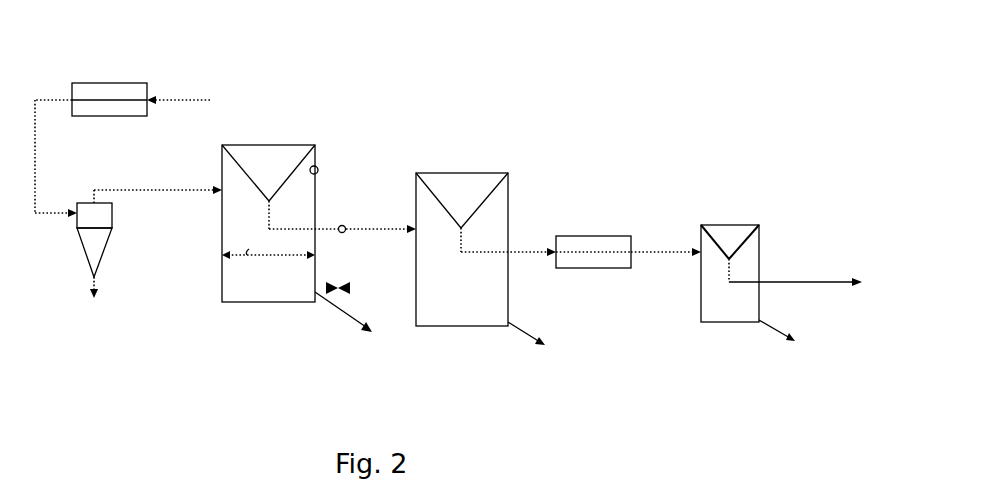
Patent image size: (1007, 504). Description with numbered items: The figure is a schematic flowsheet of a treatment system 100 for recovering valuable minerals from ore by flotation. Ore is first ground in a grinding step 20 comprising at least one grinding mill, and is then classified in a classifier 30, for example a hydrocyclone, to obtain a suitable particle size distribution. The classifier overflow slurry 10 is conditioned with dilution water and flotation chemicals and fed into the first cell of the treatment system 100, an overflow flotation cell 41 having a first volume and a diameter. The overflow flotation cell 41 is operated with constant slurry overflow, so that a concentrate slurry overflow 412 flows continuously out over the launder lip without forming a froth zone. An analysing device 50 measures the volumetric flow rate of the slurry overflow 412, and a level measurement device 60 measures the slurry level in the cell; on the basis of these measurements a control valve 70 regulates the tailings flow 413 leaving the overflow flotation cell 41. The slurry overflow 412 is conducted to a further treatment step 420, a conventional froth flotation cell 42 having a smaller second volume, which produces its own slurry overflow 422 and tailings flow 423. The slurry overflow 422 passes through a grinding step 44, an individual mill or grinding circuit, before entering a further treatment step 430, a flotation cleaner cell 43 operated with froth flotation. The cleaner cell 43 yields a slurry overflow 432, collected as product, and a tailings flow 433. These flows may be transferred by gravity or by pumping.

The treatment system 100 is at (372, 64).
The grinding step 20 is at (118, 83).
The classifier overflow slurry 10 is at (146, 189).
The classifier 30 is at (110, 252).
The overflow flotation cell 41 is at (232, 303).
The level measurement device 60 is at (318, 170).
The analysing device 50 is at (342, 225).
The slurry overflow 412 is at (378, 236).
The control valve 70 is at (338, 282).
The tailings flow 413 is at (338, 308).
The further treatment step 420 is at (468, 162).
The conventional froth flotation cell 42 is at (470, 327).
The slurry overflow 422 is at (537, 250).
The grinding step 44 is at (606, 236).
The tailings flow 423 is at (527, 330).
The flotation cleaner cell 43 is at (708, 323).
The further treatment step 430 is at (731, 217).
The slurry overflow 432 is at (795, 282).
The tailings flow 433 is at (776, 330).